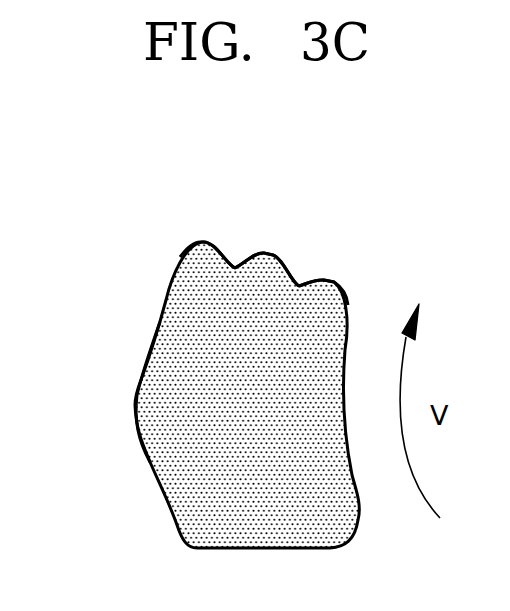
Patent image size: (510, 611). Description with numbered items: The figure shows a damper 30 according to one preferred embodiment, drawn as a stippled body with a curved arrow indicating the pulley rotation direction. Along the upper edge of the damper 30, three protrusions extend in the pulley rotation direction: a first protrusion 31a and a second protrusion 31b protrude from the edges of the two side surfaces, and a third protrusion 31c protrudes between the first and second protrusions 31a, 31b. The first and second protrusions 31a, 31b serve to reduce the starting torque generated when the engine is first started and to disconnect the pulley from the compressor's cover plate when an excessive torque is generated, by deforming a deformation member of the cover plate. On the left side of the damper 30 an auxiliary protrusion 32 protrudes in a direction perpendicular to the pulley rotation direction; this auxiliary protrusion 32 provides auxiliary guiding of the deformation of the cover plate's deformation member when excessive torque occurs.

The damper 30 is at (262, 423).
The first protrusion 31a is at (202, 241).
The second protrusion 31b is at (335, 285).
The third protrusion 31c is at (273, 254).
The auxiliary protrusion 32 is at (136, 405).